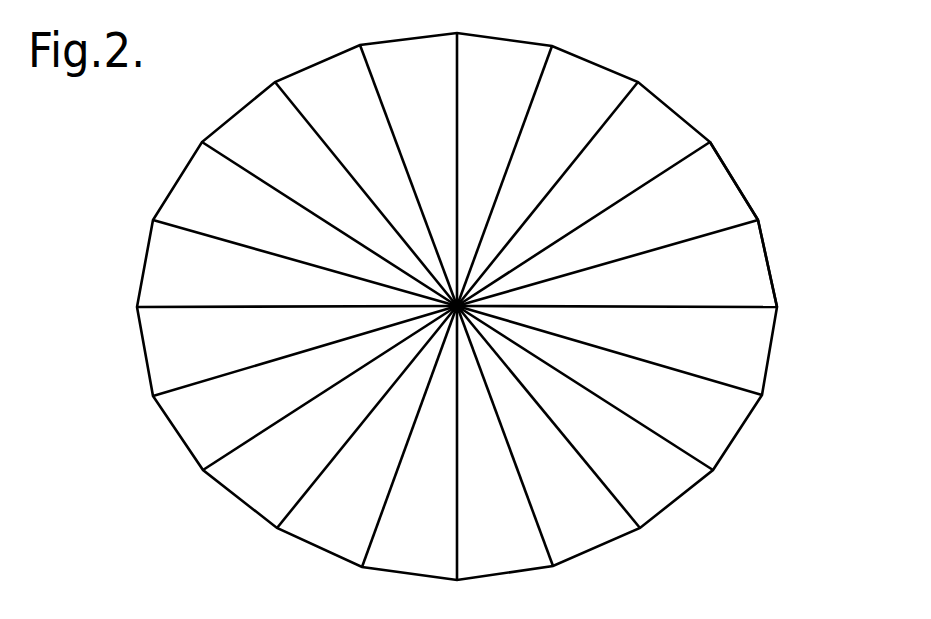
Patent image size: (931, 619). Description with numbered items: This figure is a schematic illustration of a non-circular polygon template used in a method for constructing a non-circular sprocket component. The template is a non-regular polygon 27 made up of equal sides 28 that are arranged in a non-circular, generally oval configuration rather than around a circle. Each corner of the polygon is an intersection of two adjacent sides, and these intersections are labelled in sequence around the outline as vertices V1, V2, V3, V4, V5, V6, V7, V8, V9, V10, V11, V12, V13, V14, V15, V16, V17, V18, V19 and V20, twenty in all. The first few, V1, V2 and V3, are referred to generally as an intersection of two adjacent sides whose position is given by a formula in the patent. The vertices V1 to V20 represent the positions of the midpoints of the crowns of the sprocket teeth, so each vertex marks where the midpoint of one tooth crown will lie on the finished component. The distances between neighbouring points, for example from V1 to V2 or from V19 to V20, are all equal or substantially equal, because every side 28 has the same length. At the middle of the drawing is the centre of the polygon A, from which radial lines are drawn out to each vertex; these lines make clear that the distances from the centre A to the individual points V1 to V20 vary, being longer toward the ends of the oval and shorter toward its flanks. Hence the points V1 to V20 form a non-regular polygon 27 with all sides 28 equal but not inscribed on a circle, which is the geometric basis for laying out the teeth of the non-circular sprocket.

The non-regular polygon 27 is at (690, 89).
The equal sides 28 is at (740, 180).
The centre of the polygon A is at (508, 300).
The vertex V1 is at (638, 306).
The vertex V2 is at (628, 254).
The vertex V3 is at (601, 209).
The vertex V4 is at (558, 176).
The vertex V5 is at (513, 159).
The vertex V6 is at (457, 153).
The vertex V7 is at (394, 158).
The vertex V8 is at (346, 177).
The vertex V9 is at (309, 209).
The vertex V10 is at (277, 254).
The vertex V11 is at (269, 307).
The vertex V12 is at (277, 363).
The vertex V13 is at (304, 403).
The vertex V14 is at (342, 434).
The vertex V15 is at (393, 453).
The vertex V16 is at (460, 460).
The vertex V17 is at (521, 453).
The vertex V18 is at (568, 434).
The vertex V19 is at (611, 403).
The vertex V20 is at (636, 362).